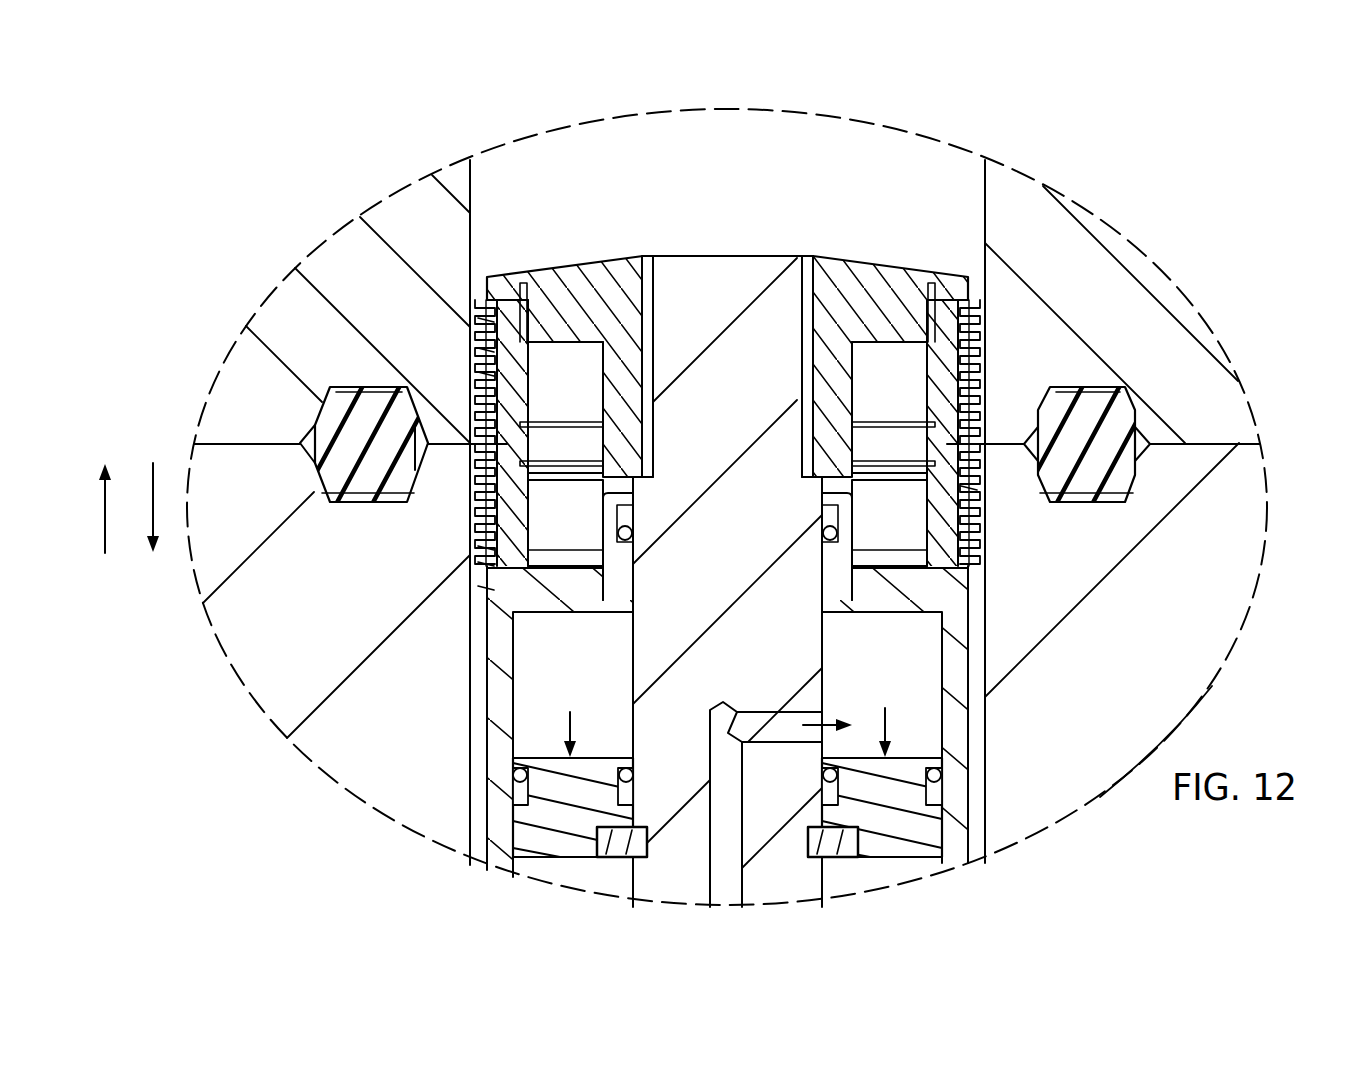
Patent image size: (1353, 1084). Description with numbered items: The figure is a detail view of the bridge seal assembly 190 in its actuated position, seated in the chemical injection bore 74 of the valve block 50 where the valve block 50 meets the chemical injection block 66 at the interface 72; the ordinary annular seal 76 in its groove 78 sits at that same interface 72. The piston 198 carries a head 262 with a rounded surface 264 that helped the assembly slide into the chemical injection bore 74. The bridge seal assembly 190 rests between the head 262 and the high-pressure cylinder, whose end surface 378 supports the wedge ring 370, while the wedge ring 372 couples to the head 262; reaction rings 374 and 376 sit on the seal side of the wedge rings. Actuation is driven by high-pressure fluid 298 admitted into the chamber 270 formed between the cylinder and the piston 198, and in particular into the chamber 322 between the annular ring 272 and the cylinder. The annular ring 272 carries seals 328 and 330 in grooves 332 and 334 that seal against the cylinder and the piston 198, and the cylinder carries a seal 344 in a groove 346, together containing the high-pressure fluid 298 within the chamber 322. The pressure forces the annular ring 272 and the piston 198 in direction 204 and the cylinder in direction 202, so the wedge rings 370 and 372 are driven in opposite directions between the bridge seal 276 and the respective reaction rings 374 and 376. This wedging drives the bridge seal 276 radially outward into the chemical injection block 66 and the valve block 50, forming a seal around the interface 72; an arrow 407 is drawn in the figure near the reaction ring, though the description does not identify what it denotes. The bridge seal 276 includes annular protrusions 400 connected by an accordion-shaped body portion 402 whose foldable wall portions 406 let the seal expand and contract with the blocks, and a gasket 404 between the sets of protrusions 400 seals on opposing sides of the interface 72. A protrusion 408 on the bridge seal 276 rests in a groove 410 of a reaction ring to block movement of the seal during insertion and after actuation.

The valve block 50 is at (258, 696).
The chemical injection block 66 is at (1068, 226).
The interface 72 is at (1247, 447).
The chemical injection bore 74 is at (980, 833).
The seal 76 is at (1122, 407).
The groove 78 is at (1150, 441).
The bridge seal assembly 190 is at (456, 147).
The piston 198 is at (711, 276).
The direction 202 is at (104, 538).
The direction 204 is at (162, 478).
The head 262 is at (868, 279).
The rounded surface 264 is at (590, 268).
The chamber 270 is at (628, 875).
The annular ring 272 is at (928, 821).
The bridge seal 276 is at (975, 397).
The high-pressure fluid 298 is at (570, 712).
The chamber 322 is at (866, 658).
The seal 328 is at (518, 774).
The seal 330 is at (632, 775).
The groove 332 is at (518, 790).
The groove 334 is at (630, 790).
The seal 344 is at (633, 533).
The groove 346 is at (822, 525).
The wedge ring 370 is at (972, 607).
The wedge ring 372 is at (490, 305).
The reaction ring 374 is at (519, 523).
The reaction ring 376 is at (519, 391).
The end surface 378 is at (847, 590).
The annular protrusions 400 is at (487, 320).
The bridge seal body portion 402 is at (467, 432).
The gasket 404 is at (490, 350).
The folds 406 is at (985, 487).
The flow path 407 is at (893, 436).
The protrusion 408 is at (932, 503).
The groove 410 is at (912, 437).